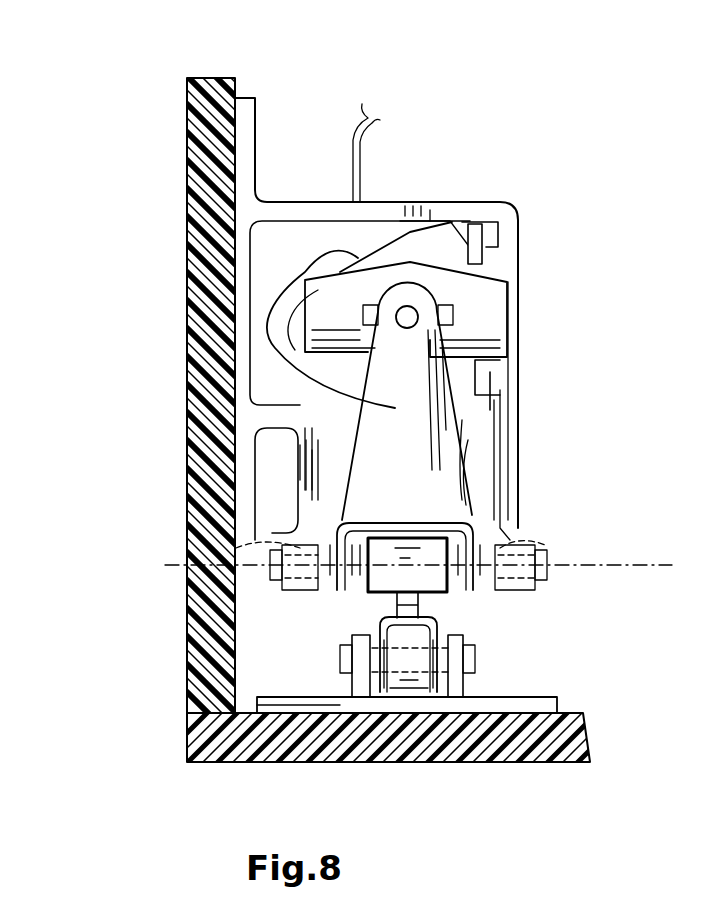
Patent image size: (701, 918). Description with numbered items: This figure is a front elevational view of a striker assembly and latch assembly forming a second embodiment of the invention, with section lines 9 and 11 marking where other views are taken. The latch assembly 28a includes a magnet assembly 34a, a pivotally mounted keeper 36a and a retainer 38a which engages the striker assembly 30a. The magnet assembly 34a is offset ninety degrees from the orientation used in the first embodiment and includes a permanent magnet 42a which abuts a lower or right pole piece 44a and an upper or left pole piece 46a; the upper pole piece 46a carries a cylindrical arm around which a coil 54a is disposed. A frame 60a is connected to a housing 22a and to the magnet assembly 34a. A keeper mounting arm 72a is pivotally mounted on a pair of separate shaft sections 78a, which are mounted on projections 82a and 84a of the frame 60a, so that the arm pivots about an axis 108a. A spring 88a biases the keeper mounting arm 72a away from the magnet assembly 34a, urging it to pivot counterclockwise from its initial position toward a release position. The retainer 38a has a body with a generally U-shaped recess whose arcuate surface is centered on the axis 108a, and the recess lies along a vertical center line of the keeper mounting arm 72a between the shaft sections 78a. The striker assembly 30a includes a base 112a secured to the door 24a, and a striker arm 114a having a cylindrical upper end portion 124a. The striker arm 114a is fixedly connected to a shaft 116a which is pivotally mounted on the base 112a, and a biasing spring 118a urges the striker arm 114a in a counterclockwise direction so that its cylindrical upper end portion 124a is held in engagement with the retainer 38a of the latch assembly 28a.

The section line 9- 9 is at (637, 83).
The section line 11- 11 is at (452, 508).
The housing 22a is at (205, 316).
The door 24a is at (527, 750).
The latch assembly 28a is at (472, 188).
The striker assembly 30a is at (340, 692).
The magnet assembly 34a is at (508, 262).
The keeper 36a is at (485, 292).
The retainer 38a is at (355, 590).
The permanent magnet 42a is at (507, 252).
The lower pole piece 44a is at (478, 374).
The upper pole piece 46a is at (397, 248).
The coil 54a is at (318, 260).
The frame 60a is at (512, 424).
The keeper mounting arm 72a is at (388, 420).
The shaft sections 78a is at (250, 546).
The projection 82a is at (307, 478).
The projection 84a is at (506, 466).
The spring 88a is at (462, 500).
The axis 108a is at (652, 565).
The base 112a is at (548, 692).
The striker arm 114a is at (432, 600).
The shaft 116a is at (478, 664).
The biasing spring 118a is at (440, 626).
The cylindrical upper end portion 124a is at (455, 596).